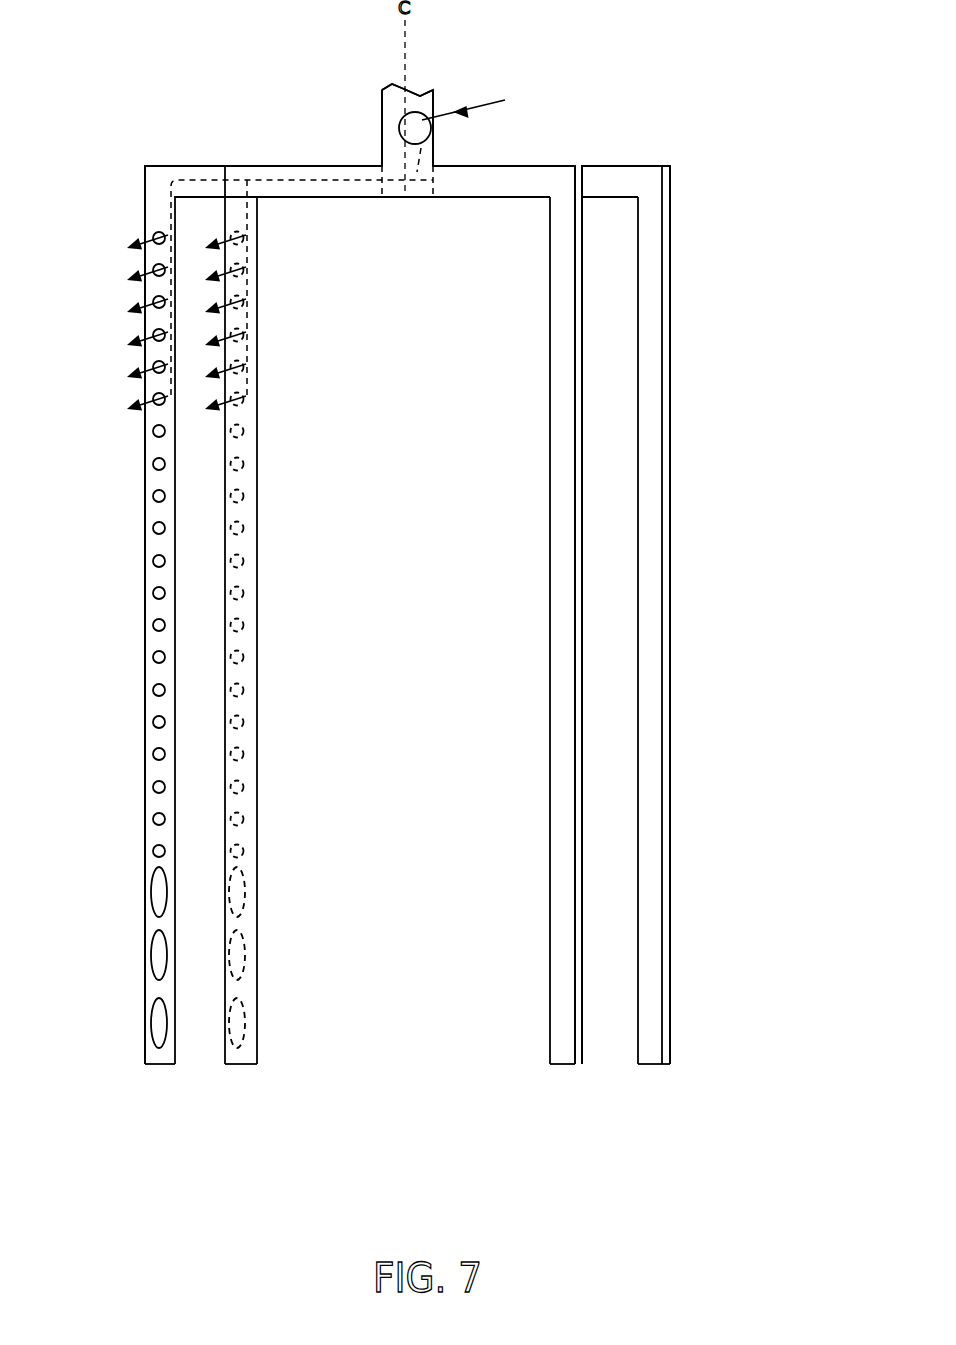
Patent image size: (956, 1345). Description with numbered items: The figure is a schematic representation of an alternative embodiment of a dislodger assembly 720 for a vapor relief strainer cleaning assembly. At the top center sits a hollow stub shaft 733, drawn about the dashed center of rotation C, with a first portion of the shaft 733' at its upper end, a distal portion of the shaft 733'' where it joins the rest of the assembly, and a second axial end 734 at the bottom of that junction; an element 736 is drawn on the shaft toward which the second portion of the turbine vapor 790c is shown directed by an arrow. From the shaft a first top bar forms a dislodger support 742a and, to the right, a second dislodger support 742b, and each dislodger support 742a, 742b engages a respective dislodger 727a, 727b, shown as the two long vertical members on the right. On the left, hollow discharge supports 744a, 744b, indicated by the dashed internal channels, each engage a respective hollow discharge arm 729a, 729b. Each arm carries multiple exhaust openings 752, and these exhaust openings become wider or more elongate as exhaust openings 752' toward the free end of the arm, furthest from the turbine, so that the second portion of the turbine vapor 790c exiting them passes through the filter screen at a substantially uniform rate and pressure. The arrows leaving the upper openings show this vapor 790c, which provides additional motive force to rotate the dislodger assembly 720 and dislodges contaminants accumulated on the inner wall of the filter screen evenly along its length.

The dislodger assembly 720 is at (812, 110).
The dislodger 727a is at (600, 660).
The dislodger 727b is at (665, 628).
The hollow discharge arm 729a is at (250, 668).
The hollow discharge arm 729b is at (152, 670).
The hollow stub shaft 733 is at (376, 120).
The stem top notch 733' is at (419, 61).
The stem channel junction 733'' is at (485, 152).
The channel junction 734 is at (403, 197).
The inlet opening 736 is at (436, 119).
The dislodger support 742a is at (508, 188).
The dislodger support 742b is at (618, 172).
The hollow discharge support 744a is at (252, 168).
The hollow discharge support 744b is at (177, 170).
The exhaust openings 752 is at (186, 545).
The exhaust openings 752' is at (153, 957).
The second portion of the turbine vapor 790c is at (505, 100).